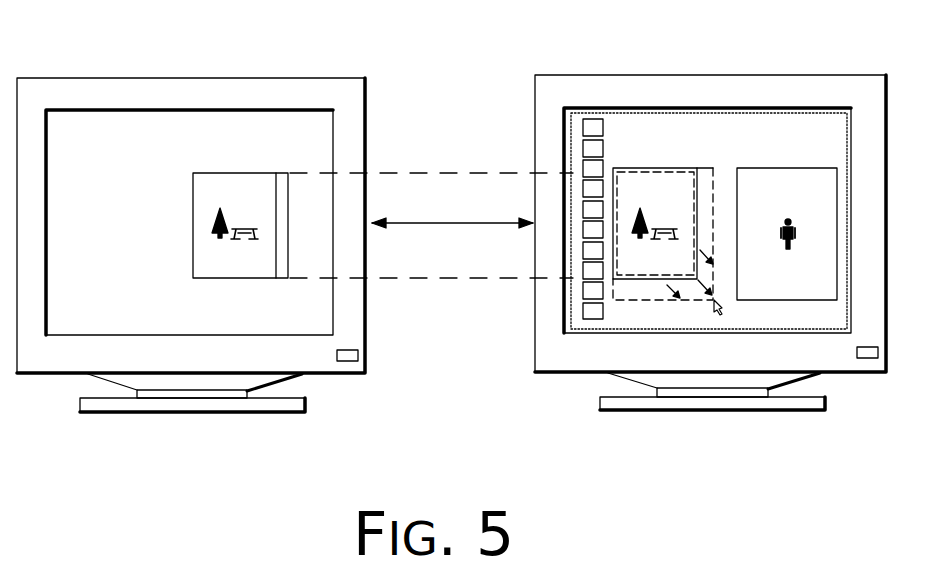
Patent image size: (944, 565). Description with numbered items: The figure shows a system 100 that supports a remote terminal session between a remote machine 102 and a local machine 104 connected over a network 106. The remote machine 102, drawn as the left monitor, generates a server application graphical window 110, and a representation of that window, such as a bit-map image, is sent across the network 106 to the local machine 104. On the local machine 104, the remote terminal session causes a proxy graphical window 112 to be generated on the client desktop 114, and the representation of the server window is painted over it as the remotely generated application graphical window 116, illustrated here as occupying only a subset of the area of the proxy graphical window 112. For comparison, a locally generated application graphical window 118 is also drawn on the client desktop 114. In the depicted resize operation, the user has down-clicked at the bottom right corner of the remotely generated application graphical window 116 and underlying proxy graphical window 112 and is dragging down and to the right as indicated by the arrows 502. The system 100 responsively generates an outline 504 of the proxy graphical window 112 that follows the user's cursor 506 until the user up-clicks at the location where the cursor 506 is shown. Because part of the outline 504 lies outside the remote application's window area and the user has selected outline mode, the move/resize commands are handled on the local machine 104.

The system 100 is at (104, 27).
The remote machine 102 is at (191, 245).
The local machine 104 is at (710, 242).
The network 106 is at (431, 225).
The server application graphical window 110 is at (192, 173).
The proxy graphical window 112 is at (640, 154).
The client desktop 114 is at (775, 330).
The remotely generated application graphical window 116 is at (688, 160).
The locally generated application graphical window 118 is at (761, 168).
The arrows 502 is at (673, 275).
The outline 504 is at (698, 168).
The cursor 506 is at (714, 309).